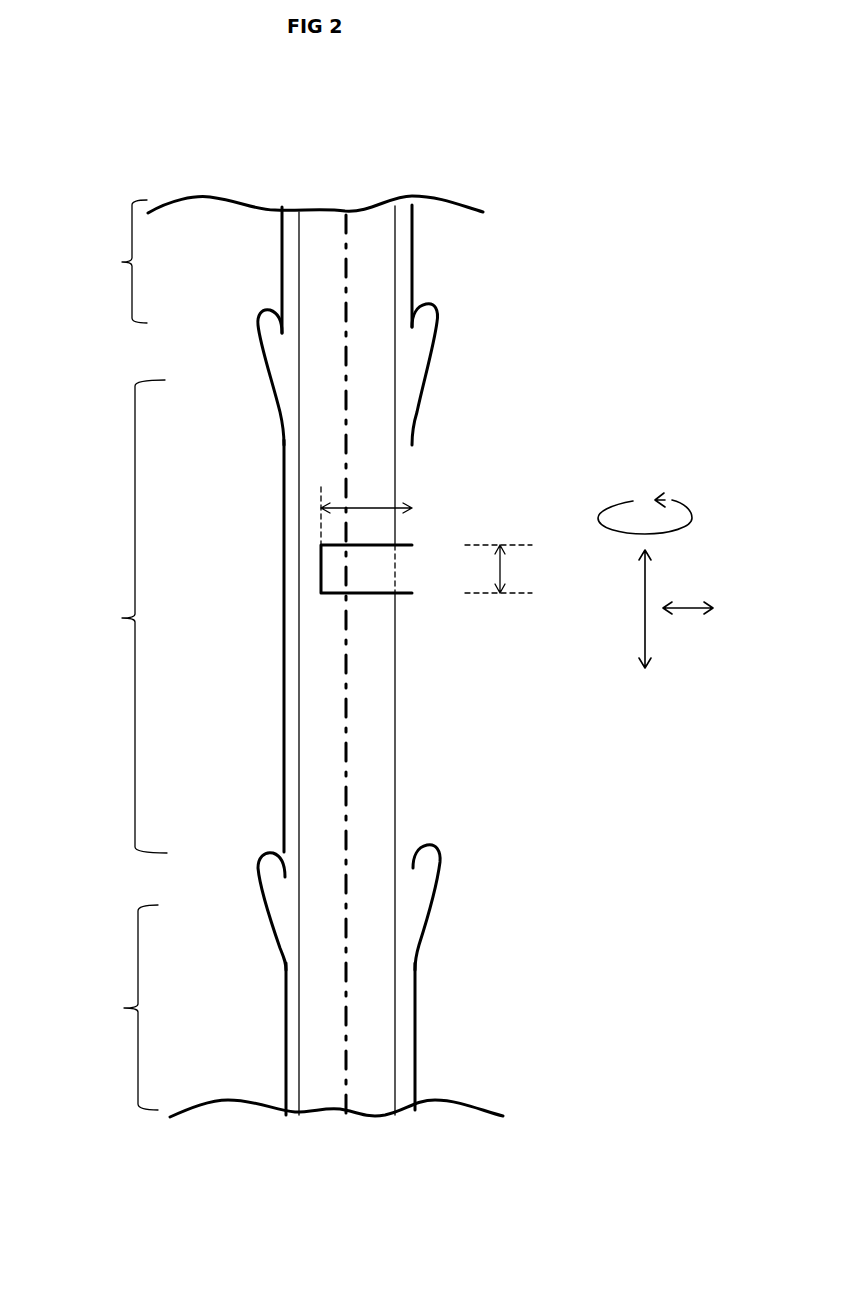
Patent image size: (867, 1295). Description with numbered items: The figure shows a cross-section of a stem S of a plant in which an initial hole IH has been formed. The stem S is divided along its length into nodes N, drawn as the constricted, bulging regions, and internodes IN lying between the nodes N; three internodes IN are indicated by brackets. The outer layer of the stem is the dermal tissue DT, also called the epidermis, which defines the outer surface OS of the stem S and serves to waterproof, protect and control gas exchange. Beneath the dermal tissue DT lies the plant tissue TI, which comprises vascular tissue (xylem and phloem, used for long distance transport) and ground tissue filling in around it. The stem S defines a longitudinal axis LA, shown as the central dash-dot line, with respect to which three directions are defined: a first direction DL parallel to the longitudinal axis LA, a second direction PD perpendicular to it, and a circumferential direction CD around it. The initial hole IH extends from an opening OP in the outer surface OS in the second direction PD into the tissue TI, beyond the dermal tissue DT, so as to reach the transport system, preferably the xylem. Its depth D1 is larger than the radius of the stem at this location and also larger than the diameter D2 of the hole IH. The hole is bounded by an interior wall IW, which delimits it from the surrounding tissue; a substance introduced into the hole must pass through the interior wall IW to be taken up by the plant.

The longitudinal axis LA is at (344, 221).
The stem S is at (281, 247).
The dermal tissue DT is at (405, 280).
The plant tissue TI is at (368, 418).
The node N is at (224, 351).
The internode IN is at (122, 655).
The outer surface OS is at (429, 1028).
The initial hole IH is at (334, 567).
The opening OP is at (425, 562).
The interior wall IW is at (393, 584).
The depth D1 is at (366, 514).
The diameter D2 is at (503, 569).
The circumferential direction CD is at (685, 500).
The first direction DL is at (645, 625).
The second direction PD is at (687, 615).